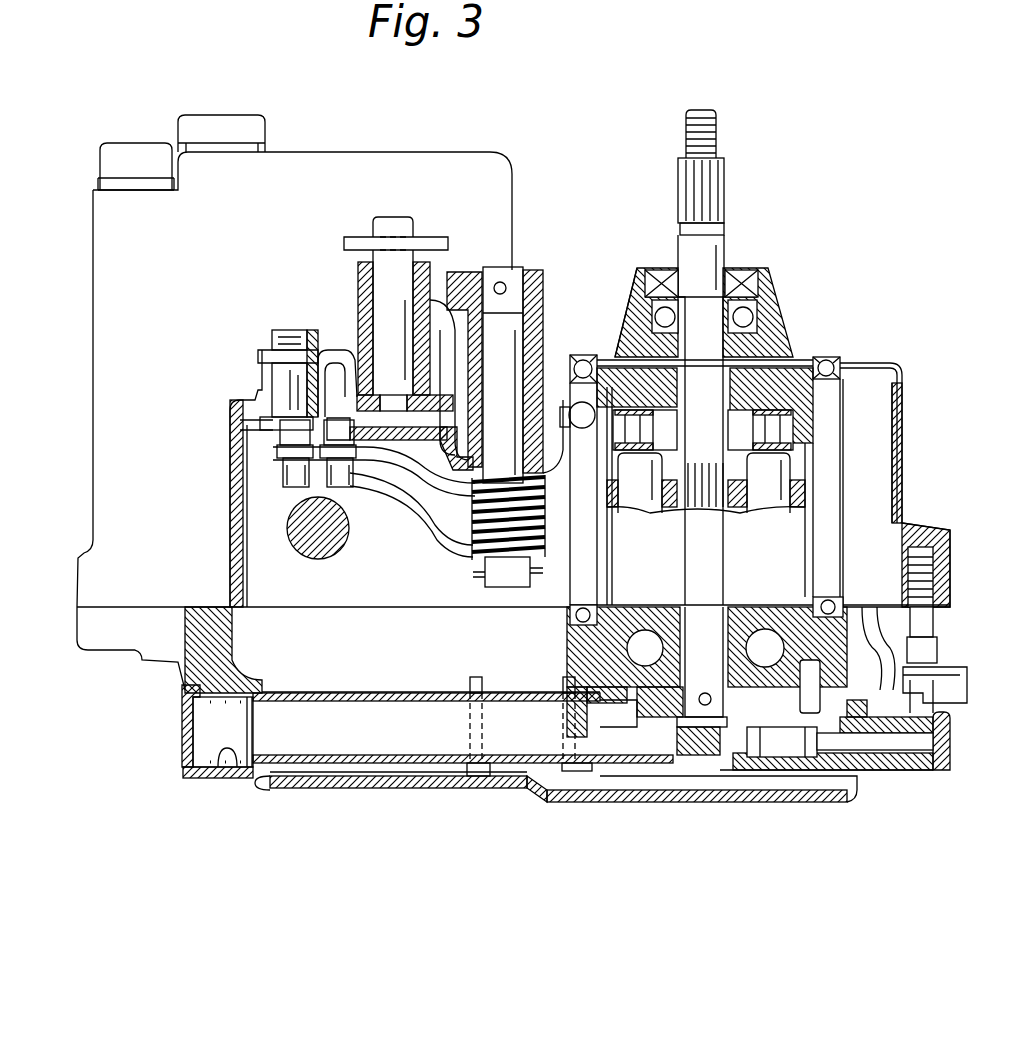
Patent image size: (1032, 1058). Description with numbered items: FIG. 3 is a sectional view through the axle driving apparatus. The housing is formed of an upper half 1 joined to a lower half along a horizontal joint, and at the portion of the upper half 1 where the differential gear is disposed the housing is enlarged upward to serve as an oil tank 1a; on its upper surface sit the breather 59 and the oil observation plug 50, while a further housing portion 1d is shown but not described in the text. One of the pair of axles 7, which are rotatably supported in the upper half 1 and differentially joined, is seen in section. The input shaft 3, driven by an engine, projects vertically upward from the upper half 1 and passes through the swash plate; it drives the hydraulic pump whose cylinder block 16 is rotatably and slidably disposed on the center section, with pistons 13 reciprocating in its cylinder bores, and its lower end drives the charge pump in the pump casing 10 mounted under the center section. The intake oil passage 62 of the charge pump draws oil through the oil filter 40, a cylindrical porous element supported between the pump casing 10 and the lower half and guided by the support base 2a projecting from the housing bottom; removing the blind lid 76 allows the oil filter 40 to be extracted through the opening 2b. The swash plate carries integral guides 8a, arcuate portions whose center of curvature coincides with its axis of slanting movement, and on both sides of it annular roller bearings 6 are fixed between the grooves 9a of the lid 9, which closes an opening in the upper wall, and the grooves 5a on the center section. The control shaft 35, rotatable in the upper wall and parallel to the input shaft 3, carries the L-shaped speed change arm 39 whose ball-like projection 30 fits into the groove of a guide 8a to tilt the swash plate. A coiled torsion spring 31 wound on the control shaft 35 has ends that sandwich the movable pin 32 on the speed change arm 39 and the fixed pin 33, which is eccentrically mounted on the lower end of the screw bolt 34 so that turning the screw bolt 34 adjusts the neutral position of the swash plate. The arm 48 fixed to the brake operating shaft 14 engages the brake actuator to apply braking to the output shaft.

The upper half 1 is at (230, 482).
The oil tank 1a is at (176, 298).
The housing lower casing 1d is at (302, 580).
The support base 2a is at (480, 677).
The opening 2b is at (233, 760).
The input shaft 3 is at (728, 175).
The circular-arc-shaped grooves 5a is at (575, 612).
The annular roller bearings 6 is at (860, 508).
The axles 7 is at (333, 545).
The guides 8a is at (845, 450).
The lid 9 is at (765, 298).
The circular-arc-shaped grooves 9a is at (590, 347).
The pump casing 10 is at (713, 780).
The pistons 13 is at (600, 548).
The brake operating shaft 14 is at (397, 303).
The cylinder block 16 is at (796, 572).
The projection 30 is at (622, 330).
The coiled torsion spring 31 is at (470, 540).
The movable pin 32 is at (425, 505).
The fixed pin 33 is at (292, 493).
The screw bolt 34 is at (290, 387).
The control shaft 35 is at (498, 280).
The speed change arm 39 is at (545, 395).
The oil filter 40 is at (388, 775).
The arm 48 is at (345, 360).
The oil observation plug 50 is at (135, 160).
The breather 59 is at (232, 125).
The intake oil passage 62 is at (670, 757).
The blind lid 76 is at (183, 740).